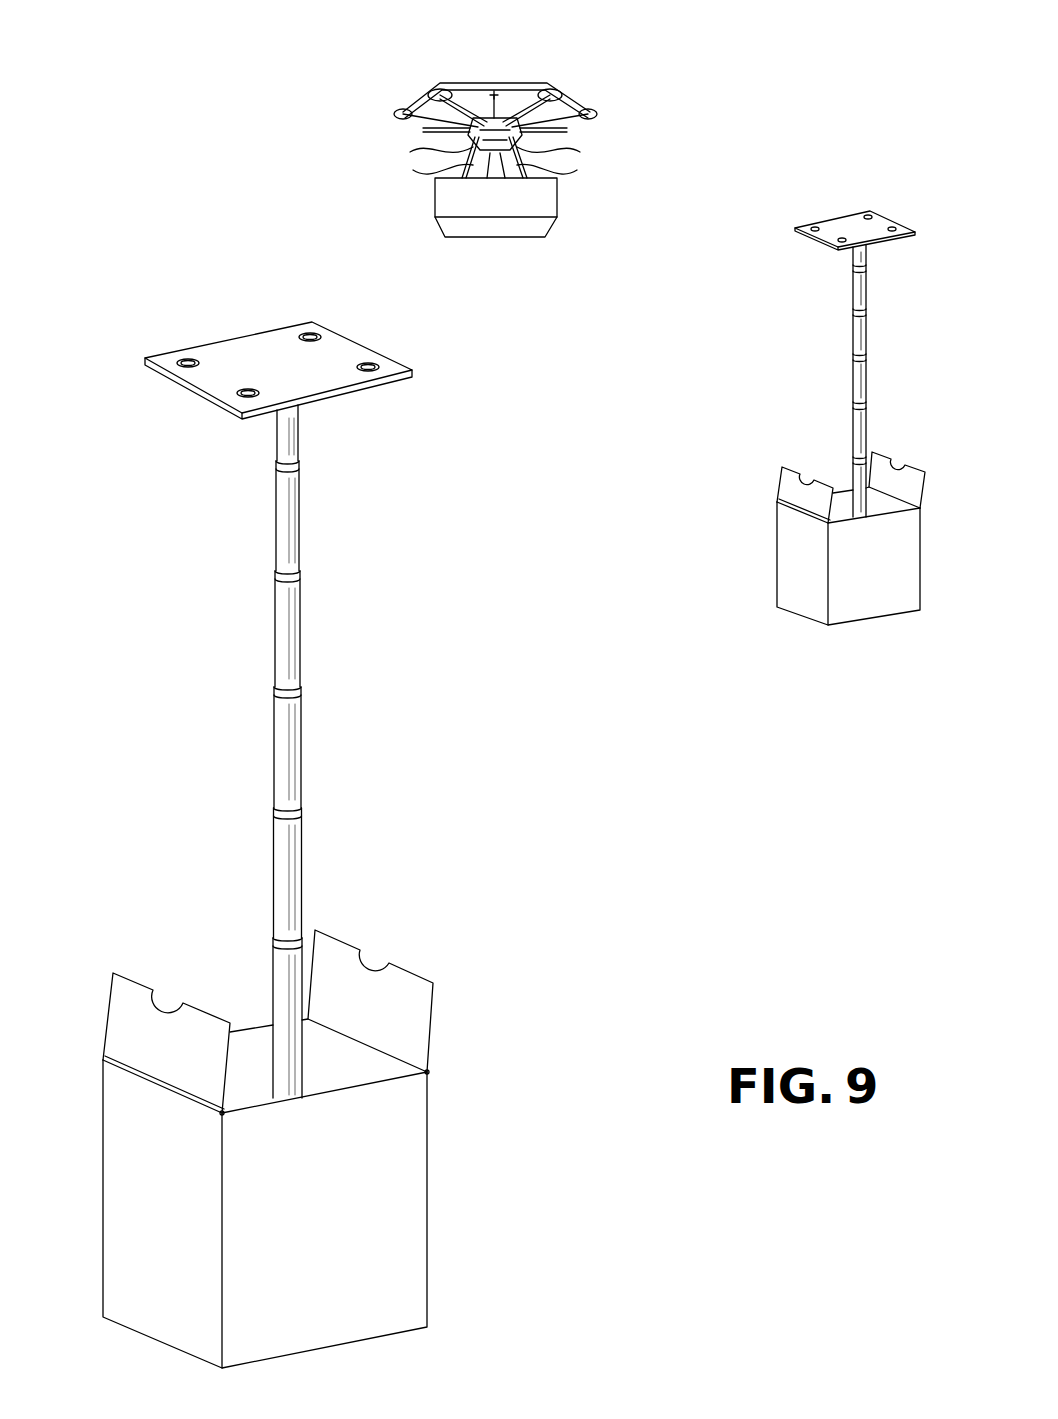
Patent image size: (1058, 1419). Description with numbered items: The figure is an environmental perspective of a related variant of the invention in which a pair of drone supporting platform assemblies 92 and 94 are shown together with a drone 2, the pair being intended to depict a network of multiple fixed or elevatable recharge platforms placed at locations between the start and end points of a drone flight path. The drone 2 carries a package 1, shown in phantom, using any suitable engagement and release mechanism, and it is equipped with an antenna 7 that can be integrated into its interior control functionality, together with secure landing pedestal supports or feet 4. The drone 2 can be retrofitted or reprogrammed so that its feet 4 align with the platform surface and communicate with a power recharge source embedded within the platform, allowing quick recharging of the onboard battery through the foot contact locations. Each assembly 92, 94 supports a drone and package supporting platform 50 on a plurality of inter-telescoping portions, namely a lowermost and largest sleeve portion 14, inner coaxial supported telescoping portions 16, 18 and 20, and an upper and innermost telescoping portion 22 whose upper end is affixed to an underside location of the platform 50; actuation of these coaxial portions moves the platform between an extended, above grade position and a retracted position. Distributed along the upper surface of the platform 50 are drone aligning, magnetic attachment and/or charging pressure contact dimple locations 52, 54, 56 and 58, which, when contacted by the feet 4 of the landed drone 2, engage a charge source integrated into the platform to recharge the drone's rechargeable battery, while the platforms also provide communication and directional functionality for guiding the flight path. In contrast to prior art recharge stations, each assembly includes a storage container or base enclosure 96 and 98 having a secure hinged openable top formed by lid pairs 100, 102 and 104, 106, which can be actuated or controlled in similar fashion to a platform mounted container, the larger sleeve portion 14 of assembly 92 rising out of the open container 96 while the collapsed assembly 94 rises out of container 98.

The package 1 is at (545, 198).
The drone 2 is at (362, 80).
The pedestal supports or feet 4 is at (588, 152).
The antenna 7 is at (493, 93).
The lower most and largest sleeve portion 14 is at (272, 998).
The telescoping portion 16 is at (272, 863).
The telescoping portion 18 is at (302, 770).
The telescoping portion 20 is at (272, 643).
The upper and inner-most telescoping portion 22 is at (300, 543).
The drone and package supporting platform 50 is at (248, 347).
The charging pressure dimple location 52 is at (187, 360).
The charging pressure dimple location 54 is at (238, 383).
The charging pressure dimple location 56 is at (312, 332).
The charging pressure dimple location 58 is at (368, 362).
The drone supporting platform assembly 92 is at (85, 657).
The drone supporting platform assembly 94 is at (770, 345).
The storage container or base enclosure 96 is at (123, 1170).
The storage container or base enclosure 98 is at (792, 562).
The lid 100 is at (123, 987).
The lid 102 is at (412, 998).
The lid 104 is at (788, 487).
The lid 106 is at (908, 468).